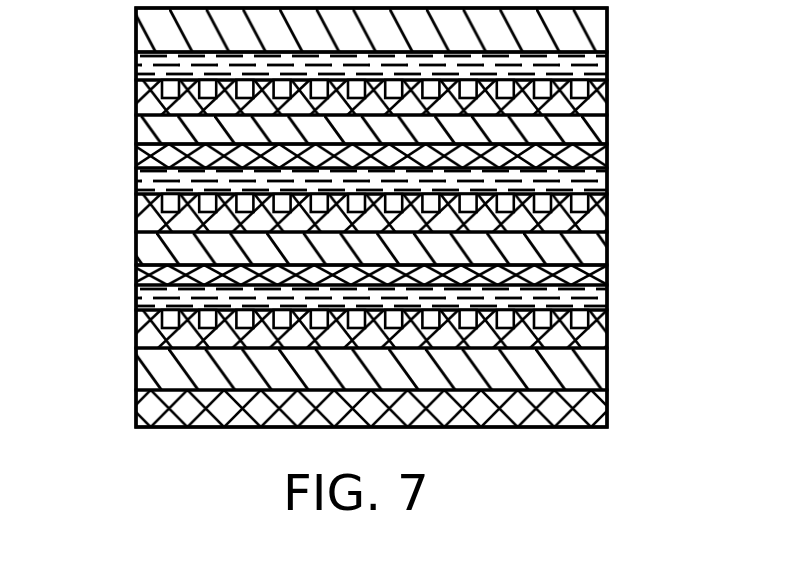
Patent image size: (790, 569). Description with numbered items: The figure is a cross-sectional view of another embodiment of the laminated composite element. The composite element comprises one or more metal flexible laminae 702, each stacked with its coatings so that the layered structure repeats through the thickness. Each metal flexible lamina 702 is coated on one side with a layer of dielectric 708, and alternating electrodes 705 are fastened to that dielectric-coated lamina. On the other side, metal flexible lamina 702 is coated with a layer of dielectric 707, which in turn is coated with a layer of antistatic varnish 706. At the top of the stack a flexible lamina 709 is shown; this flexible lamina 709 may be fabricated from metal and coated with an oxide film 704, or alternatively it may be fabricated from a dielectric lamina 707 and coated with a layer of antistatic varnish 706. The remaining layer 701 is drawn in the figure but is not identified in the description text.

The adhesive layer 701 is at (600, 70).
The metal flexible lamina 702 is at (597, 140).
The oxide film 704 is at (151, 50).
The alternating electrodes 705 is at (168, 89).
The layer of antistatic varnish 706 is at (136, 145).
The layer of dielectric 707 is at (605, 167).
The layer of dielectric 708 is at (598, 108).
The flexible lamina 709 is at (594, 33).